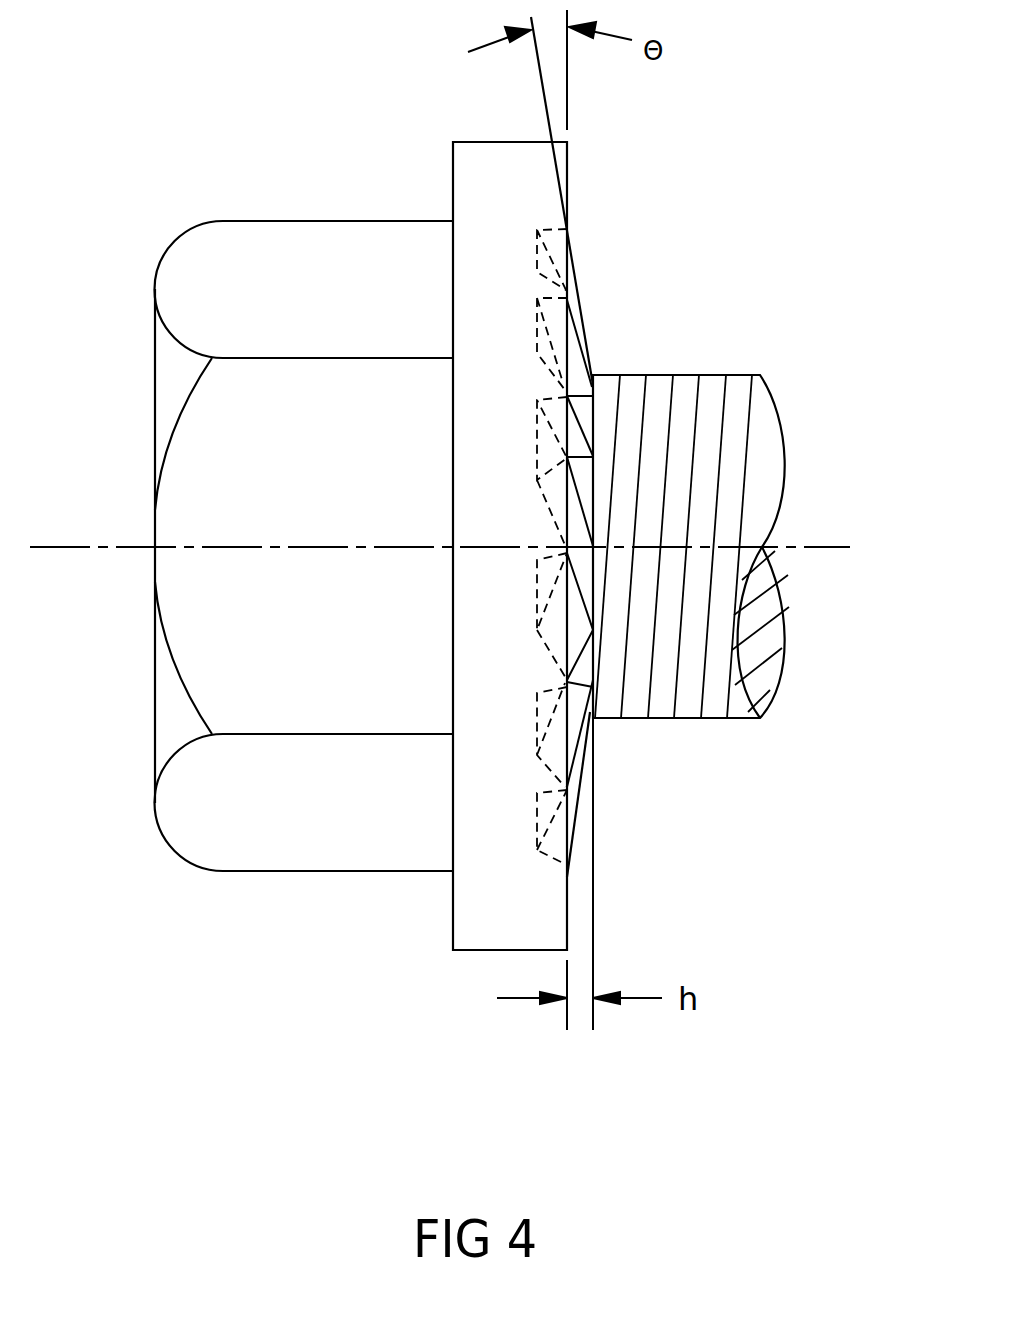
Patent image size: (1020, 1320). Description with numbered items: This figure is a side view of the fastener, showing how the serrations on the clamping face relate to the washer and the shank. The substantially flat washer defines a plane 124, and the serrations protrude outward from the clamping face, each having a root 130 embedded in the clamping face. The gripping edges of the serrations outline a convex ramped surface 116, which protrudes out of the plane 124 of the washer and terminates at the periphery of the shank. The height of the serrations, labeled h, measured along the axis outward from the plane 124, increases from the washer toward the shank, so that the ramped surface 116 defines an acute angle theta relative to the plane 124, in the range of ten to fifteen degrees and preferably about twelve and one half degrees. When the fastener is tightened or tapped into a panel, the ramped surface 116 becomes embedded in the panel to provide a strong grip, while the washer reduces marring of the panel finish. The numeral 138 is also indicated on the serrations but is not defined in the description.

The plane 124 is at (567, 181).
The ramped surface 116 is at (592, 347).
The locking teeth 138 is at (541, 782).
The root 130 is at (540, 847).